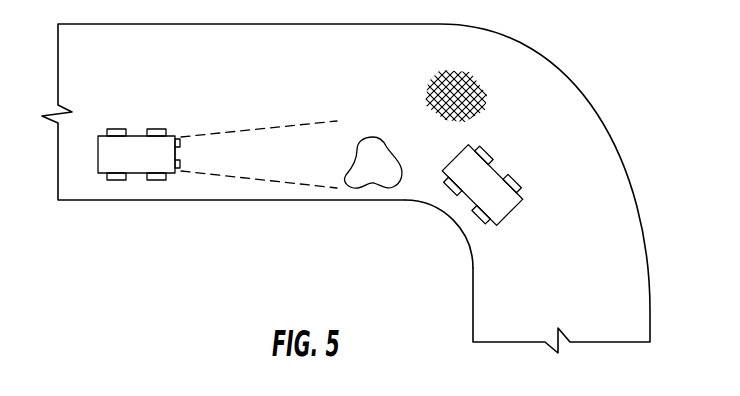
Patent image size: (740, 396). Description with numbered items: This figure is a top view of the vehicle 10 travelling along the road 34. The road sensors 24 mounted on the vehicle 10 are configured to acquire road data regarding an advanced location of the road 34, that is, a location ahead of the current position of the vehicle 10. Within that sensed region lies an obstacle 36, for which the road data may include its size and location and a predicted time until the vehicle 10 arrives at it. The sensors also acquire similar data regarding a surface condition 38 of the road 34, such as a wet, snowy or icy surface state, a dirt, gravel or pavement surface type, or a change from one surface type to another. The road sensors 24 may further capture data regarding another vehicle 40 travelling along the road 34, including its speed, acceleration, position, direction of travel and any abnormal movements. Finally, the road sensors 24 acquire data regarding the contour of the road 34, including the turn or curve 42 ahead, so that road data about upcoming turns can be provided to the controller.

The vehicle 10 is at (146, 120).
The road sensors 24 is at (180, 142).
The road 34 is at (73, 194).
The obstacle 36 is at (376, 147).
The surface condition 38 is at (465, 100).
The other vehicle 40 is at (475, 178).
The turn or curve 42 is at (438, 217).